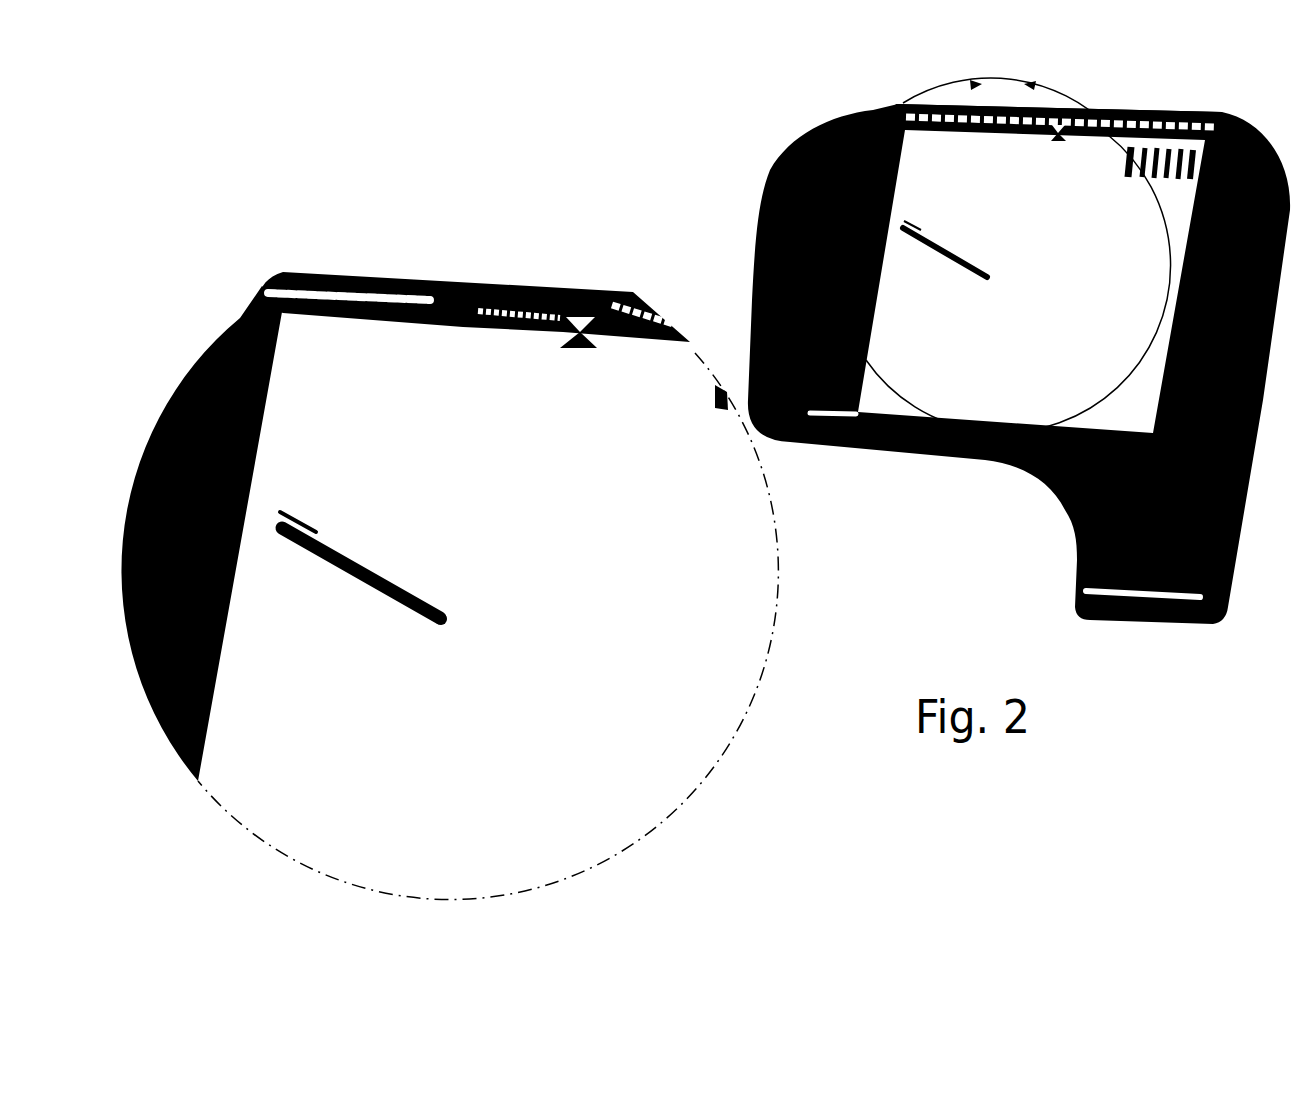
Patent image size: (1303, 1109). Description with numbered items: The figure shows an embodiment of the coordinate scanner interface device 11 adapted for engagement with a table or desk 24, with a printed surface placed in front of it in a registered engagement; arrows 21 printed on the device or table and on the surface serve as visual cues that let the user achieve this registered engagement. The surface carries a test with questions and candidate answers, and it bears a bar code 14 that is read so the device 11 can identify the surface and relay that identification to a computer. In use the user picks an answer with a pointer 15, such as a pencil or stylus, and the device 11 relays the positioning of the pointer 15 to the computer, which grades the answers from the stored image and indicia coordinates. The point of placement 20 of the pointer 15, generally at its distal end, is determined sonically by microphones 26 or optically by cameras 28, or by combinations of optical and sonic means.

The coordinate scanner interface device 11 is at (455, 280).
The bar code 14 is at (1182, 157).
The pointer 15 is at (335, 575).
The point of placement 20 is at (437, 623).
The arrows 21 is at (620, 288).
The table or desk 24 is at (1157, 627).
The microphones 26 is at (358, 277).
The cameras 28 is at (517, 283).